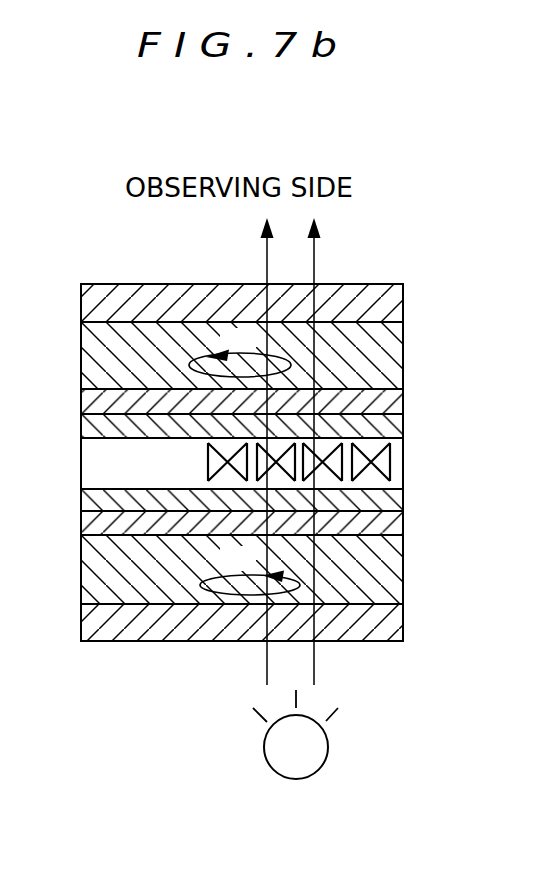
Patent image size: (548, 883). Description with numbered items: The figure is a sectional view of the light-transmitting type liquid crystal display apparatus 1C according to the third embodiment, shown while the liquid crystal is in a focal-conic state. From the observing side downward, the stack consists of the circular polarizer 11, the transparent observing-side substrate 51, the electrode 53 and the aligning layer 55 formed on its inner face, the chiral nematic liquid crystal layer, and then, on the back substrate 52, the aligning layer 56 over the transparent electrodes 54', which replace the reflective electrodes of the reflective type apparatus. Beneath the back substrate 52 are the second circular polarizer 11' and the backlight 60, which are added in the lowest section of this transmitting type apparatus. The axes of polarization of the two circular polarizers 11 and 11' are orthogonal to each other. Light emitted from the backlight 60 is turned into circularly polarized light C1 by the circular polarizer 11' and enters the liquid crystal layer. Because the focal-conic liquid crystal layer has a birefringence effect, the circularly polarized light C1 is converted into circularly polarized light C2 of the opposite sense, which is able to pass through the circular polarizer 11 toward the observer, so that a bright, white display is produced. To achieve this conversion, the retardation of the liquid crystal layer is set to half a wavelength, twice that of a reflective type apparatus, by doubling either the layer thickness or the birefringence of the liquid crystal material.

The light-transmitting type liquid crystal display apparatus 1C is at (137, 251).
The circular polarizer 11 is at (209, 298).
The substrate 51 is at (86, 358).
The electrode 53 is at (86, 403).
The aligning layer 55 is at (86, 431).
The aligning layer 56 is at (86, 500).
The transparent electrode 54' is at (208, 523).
The substrate 52 is at (86, 572).
The second circular polarizer 11' is at (208, 622).
The backlight 60 is at (263, 747).
The circularly polarized light C1 is at (250, 569).
The circular polarized light C2 is at (240, 351).